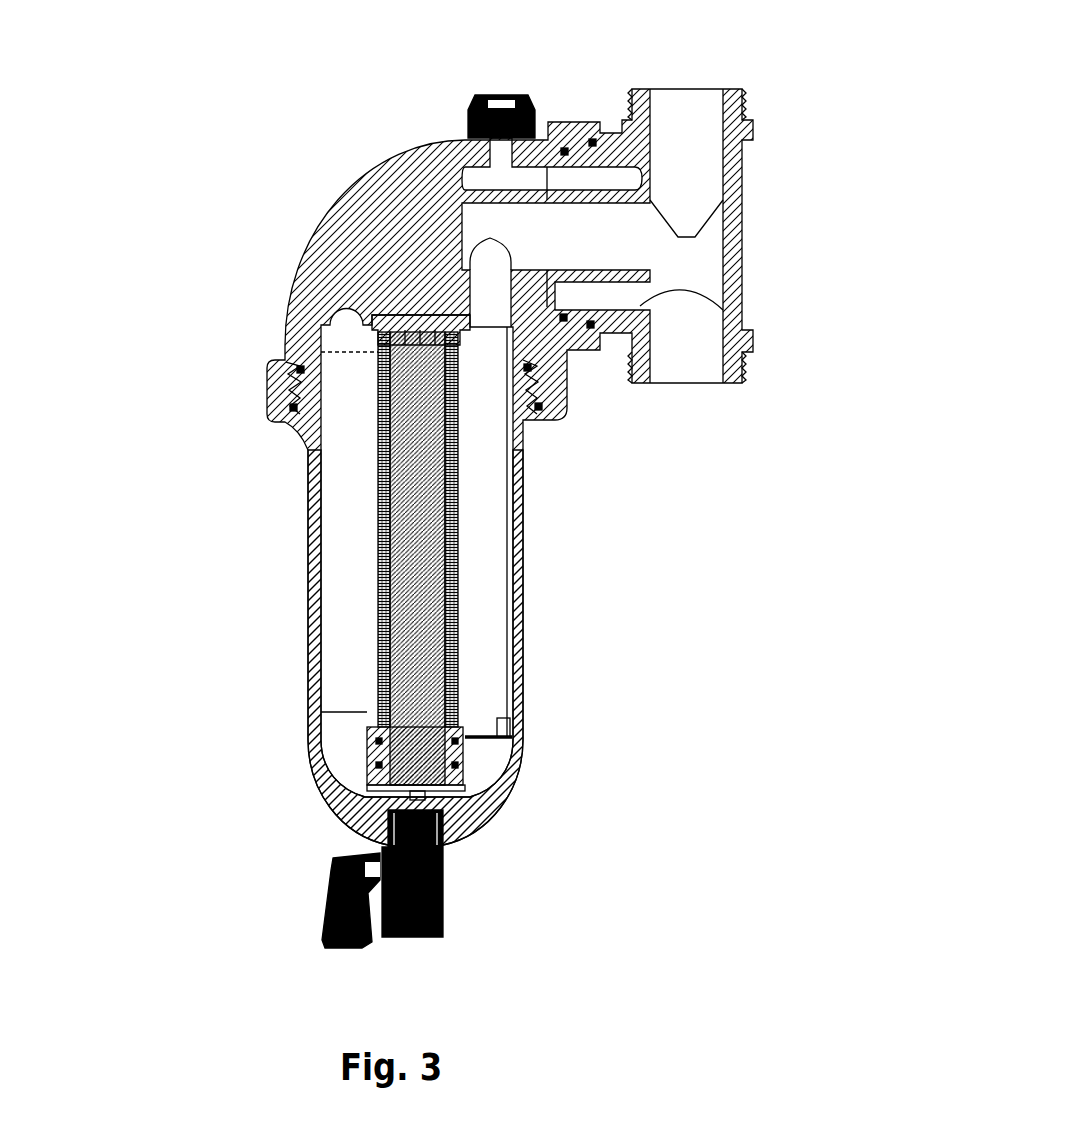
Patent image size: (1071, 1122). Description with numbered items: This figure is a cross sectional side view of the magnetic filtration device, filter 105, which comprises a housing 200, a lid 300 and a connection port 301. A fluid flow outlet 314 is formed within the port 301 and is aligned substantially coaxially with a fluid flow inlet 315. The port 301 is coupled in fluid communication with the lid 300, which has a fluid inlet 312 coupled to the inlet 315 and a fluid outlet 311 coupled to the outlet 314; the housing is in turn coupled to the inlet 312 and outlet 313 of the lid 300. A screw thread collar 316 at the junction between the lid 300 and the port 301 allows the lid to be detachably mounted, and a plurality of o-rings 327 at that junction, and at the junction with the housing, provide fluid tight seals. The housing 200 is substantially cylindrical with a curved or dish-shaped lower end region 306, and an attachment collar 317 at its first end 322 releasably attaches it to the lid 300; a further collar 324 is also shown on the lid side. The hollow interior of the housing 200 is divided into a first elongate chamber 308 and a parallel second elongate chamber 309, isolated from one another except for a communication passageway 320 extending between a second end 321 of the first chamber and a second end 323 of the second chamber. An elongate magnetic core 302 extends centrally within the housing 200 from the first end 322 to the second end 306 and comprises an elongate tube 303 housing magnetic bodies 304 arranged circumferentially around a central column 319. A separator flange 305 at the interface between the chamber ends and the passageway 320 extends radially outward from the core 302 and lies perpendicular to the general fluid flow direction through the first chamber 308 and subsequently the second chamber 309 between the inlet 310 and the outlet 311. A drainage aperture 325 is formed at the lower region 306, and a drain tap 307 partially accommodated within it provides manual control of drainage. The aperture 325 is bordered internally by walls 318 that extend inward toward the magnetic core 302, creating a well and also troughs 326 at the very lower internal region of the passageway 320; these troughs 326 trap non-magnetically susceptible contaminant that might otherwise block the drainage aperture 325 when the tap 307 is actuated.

The filter 105 is at (188, 187).
The housing 200 is at (522, 583).
The lid 300 is at (380, 178).
The connection port 301 is at (742, 187).
The magnetic core 302 is at (458, 532).
The elongate tube 303 is at (385, 625).
The magnetic bodies 304 is at (380, 545).
The separator flange 305 is at (513, 738).
The lower end region 306 is at (488, 813).
The drain tap 307 is at (443, 915).
The first elongate chamber 308 is at (358, 445).
The second elongate chamber 309 is at (495, 640).
The inlet 310 is at (330, 337).
The fluid outlet 311 is at (345, 310).
The fluid inlet 312 is at (527, 180).
The outlet 313 is at (547, 235).
The fluid flow outlet 314 is at (688, 89).
The fluid flow inlet 315 is at (680, 378).
The screw thread collar 316 is at (590, 350).
The attachment collar 317 is at (267, 392).
The walls 318 is at (463, 780).
The central column 319 is at (408, 673).
The communication passageway 320 is at (345, 768).
The second end of first chamber 321 is at (345, 712).
The first end 322 is at (492, 283).
The second end of second chamber 323 is at (483, 732).
The collar nut 324 is at (530, 420).
The drainage aperture 325 is at (455, 820).
The troughs 326 is at (477, 797).
The o-rings 327 is at (605, 143).